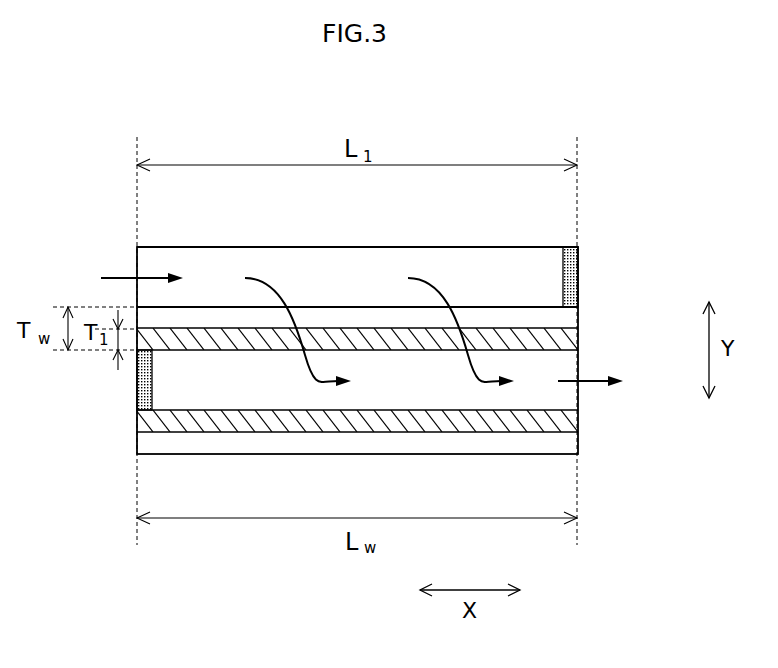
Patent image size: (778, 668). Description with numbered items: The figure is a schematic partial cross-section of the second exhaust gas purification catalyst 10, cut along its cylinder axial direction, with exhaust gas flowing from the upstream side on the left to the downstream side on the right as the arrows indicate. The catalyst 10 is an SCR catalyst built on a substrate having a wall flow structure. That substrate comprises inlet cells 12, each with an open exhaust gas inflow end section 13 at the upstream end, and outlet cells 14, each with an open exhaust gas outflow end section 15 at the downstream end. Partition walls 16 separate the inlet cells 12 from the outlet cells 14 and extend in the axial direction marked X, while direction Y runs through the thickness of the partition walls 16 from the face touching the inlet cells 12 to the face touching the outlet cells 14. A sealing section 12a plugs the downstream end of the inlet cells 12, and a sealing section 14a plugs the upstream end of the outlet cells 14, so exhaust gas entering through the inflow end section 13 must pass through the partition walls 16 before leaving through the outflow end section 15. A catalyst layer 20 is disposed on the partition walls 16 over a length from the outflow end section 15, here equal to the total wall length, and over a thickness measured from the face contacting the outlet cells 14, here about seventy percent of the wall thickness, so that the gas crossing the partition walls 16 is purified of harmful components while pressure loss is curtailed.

The second exhaust gas purification catalyst 10 is at (617, 208).
The inlet cell 12 is at (205, 265).
The sealing section 12a is at (579, 270).
The exhaust gas inflow end section 13 is at (135, 265).
The outlet cell 14 is at (565, 360).
The sealing section 14a is at (137, 388).
The exhaust gas outflow end section 15 is at (580, 402).
The partition wall 16 is at (580, 318).
The catalyst layer 20 is at (378, 410).